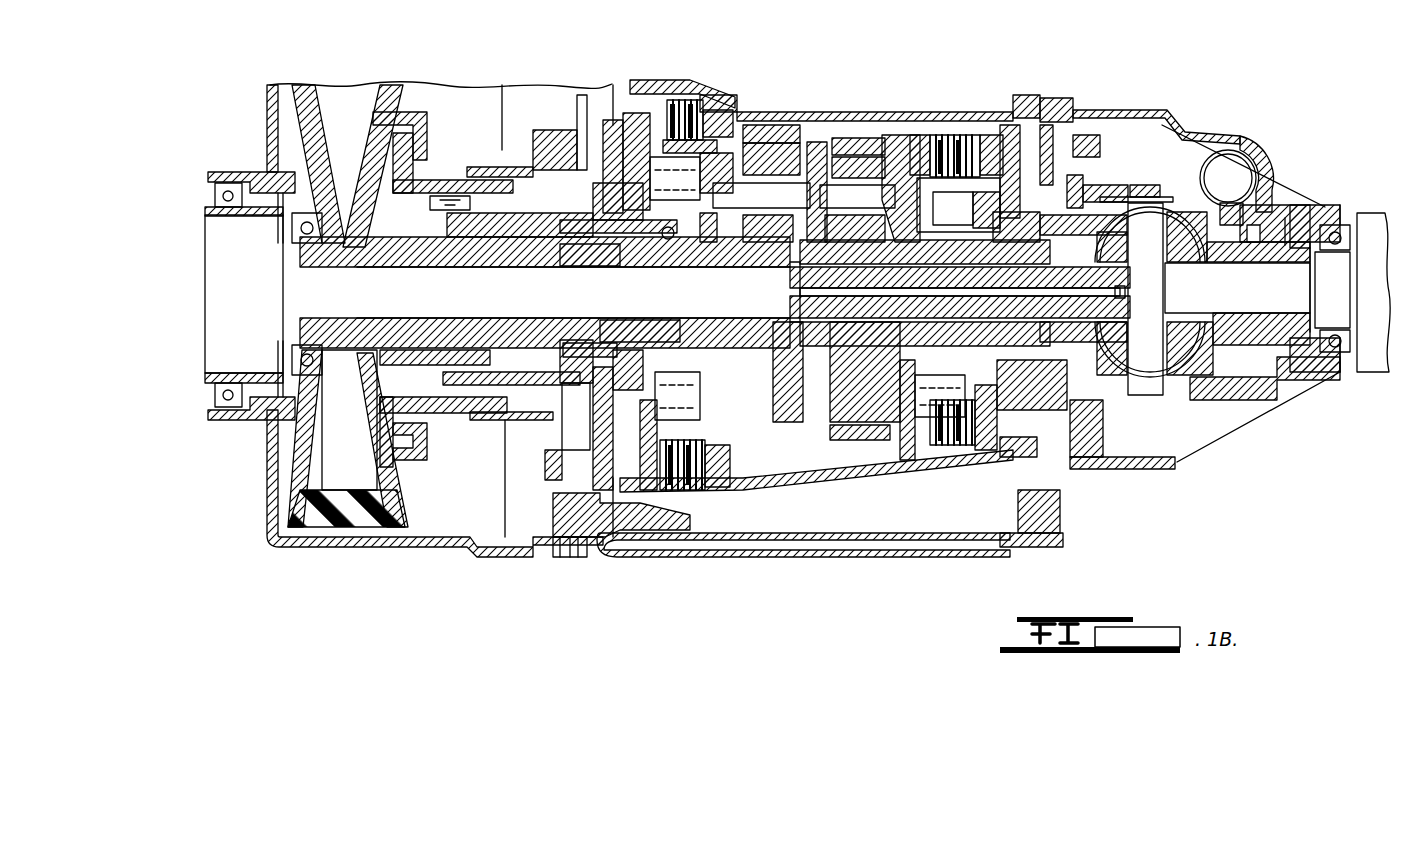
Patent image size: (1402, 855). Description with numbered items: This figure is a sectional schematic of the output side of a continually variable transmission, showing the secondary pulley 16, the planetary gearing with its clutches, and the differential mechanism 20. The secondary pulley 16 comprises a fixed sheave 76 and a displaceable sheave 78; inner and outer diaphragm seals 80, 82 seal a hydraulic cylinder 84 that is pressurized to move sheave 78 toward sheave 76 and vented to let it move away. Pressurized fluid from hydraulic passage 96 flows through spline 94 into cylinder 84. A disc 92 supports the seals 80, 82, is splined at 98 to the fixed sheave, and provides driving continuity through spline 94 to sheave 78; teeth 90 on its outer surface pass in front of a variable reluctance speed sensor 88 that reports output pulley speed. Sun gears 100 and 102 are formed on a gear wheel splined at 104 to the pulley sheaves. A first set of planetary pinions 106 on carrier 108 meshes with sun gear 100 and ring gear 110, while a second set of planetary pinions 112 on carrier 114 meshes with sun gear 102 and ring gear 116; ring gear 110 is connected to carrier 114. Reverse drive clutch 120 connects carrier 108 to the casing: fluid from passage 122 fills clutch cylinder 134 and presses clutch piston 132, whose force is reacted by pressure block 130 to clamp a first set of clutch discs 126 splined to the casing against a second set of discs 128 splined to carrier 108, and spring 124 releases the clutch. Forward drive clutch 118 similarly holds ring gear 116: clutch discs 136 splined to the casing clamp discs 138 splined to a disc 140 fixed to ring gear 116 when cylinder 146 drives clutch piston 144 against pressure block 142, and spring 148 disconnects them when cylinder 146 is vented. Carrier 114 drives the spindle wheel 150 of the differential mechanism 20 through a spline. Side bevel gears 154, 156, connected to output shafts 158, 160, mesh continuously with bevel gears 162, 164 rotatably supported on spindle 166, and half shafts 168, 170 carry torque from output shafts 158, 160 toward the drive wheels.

The secondary pulley 16 is at (292, 437).
The differential mechanism 20 is at (1147, 162).
The fixed sheave 76 is at (292, 140).
The displaceable sheave 78 is at (402, 86).
The inner diaphragm seal 80 is at (430, 207).
The outer diaphragm seal 82 is at (470, 178).
The hydraulic cylinder 84 is at (404, 375).
The variable reluctance speed sensor 88 is at (576, 552).
The teeth 90 is at (577, 482).
The disc 92 is at (562, 458).
The spline 94 is at (525, 375).
The hydraulic passage 96 is at (560, 222).
The spline 98 is at (606, 250).
The sun gear 100 is at (758, 348).
The sun gear 102 is at (800, 300).
The spline 104 is at (640, 342).
The first set of planetary pinions 106 is at (793, 165).
The carrier 108 is at (740, 130).
The ring gear 110 is at (777, 132).
The second set of planetary pinions 112 is at (855, 147).
The carrier 114 is at (842, 180).
The ring gear 116 is at (935, 137).
The forward drive clutch 118 is at (986, 125).
The reverse drive clutch 120 is at (708, 88).
The passage 122 is at (580, 435).
The spring 124 is at (690, 405).
The first set of clutch discs 126 is at (680, 475).
The second set of discs 128 is at (702, 442).
The pressure block 130 is at (722, 470).
The clutch piston 132 is at (618, 120).
The clutch cylinder 134 is at (600, 130).
The first set of clutch discs 136 is at (946, 140).
The second set of clutch discs 138 is at (930, 402).
The disc 140 is at (887, 440).
The pressure block 142 is at (926, 452).
The clutch piston 144 is at (978, 455).
The clutch cylinder 146 is at (990, 440).
The spring 148 is at (922, 390).
The spindle wheel 150 is at (1113, 190).
The side bevel gear 154 is at (1193, 248).
The side bevel gear 156 is at (1100, 262).
The output shaft 158 is at (1288, 296).
The output shaft 160 is at (1105, 310).
The bevel gear 162 is at (1187, 192).
The bevel gear 164 is at (1180, 455).
The spindle 166 is at (1147, 393).
The half shaft 168 is at (1372, 215).
The half shaft 170 is at (262, 280).